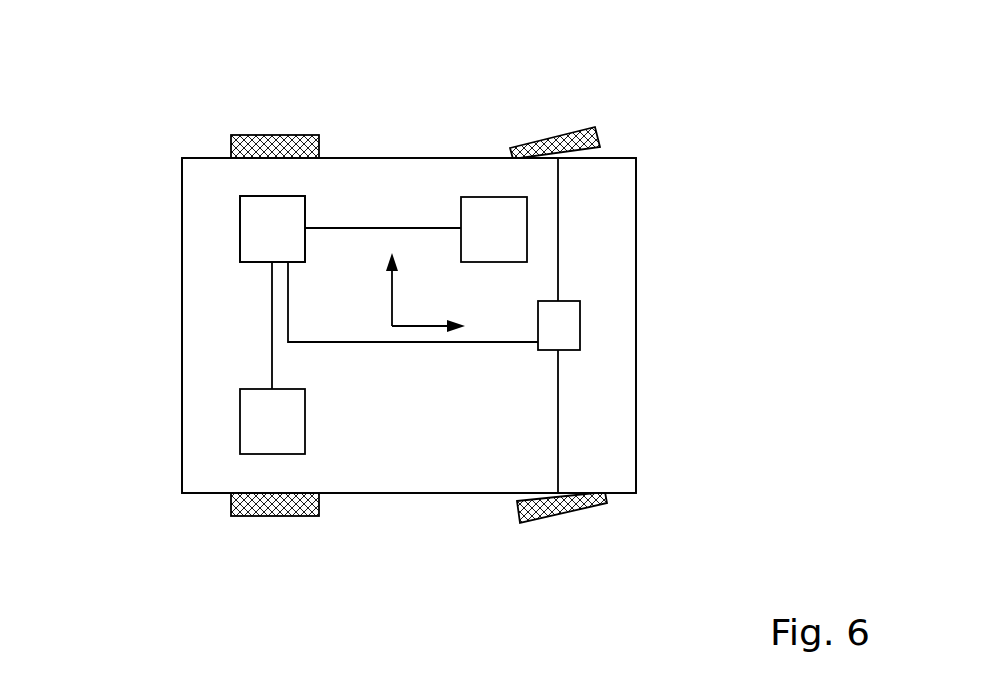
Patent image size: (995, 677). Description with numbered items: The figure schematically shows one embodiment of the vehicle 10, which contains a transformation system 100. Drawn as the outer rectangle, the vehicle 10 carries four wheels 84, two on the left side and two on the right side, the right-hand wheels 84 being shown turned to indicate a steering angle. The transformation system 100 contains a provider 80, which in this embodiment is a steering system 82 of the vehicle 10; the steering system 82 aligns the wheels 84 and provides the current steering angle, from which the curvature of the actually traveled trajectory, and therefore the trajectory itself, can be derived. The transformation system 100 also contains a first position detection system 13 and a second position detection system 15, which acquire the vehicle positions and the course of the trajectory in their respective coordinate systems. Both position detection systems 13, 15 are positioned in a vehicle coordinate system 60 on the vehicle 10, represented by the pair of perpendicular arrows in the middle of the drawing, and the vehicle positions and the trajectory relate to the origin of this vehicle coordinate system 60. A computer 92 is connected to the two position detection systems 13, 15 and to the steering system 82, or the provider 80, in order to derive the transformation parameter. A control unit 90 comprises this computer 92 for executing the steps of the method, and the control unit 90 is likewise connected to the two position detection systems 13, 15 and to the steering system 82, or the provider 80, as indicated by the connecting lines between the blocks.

The vehicle 10 is at (665, 183).
The transformation system 100 is at (132, 247).
The first position detection system 13 is at (461, 210).
The second position detection system 15 is at (305, 440).
The vehicle coordinate system 60 is at (430, 328).
The provider 80 is at (580, 313).
The steering system 82 is at (562, 390).
The wheels 84 is at (580, 126).
The control unit 90 is at (240, 216).
The computer 92 is at (272, 229).